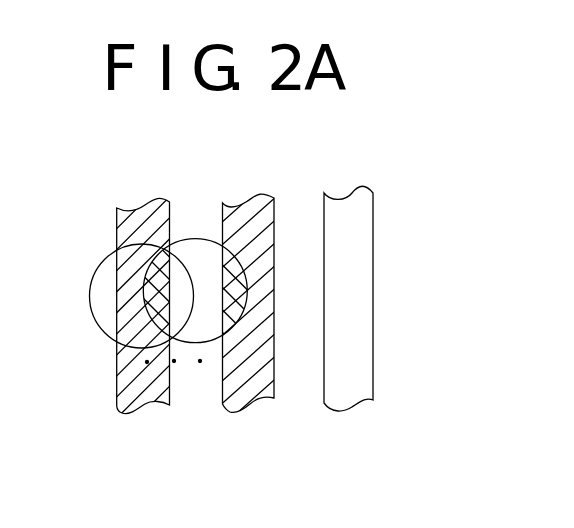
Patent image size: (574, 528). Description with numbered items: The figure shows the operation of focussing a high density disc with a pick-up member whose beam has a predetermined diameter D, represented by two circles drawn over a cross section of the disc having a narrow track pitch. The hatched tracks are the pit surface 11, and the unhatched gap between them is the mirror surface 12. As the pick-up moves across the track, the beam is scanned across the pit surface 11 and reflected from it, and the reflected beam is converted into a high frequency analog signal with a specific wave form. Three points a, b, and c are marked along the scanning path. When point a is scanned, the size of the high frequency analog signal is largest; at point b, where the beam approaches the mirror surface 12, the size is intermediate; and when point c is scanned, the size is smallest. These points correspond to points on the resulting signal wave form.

The pit surface 11 is at (133, 402).
The mirror surface 12 is at (202, 394).
The predetermined diameter D is at (190, 292).
The point a is at (145, 375).
The point b is at (179, 374).
The point c is at (200, 374).